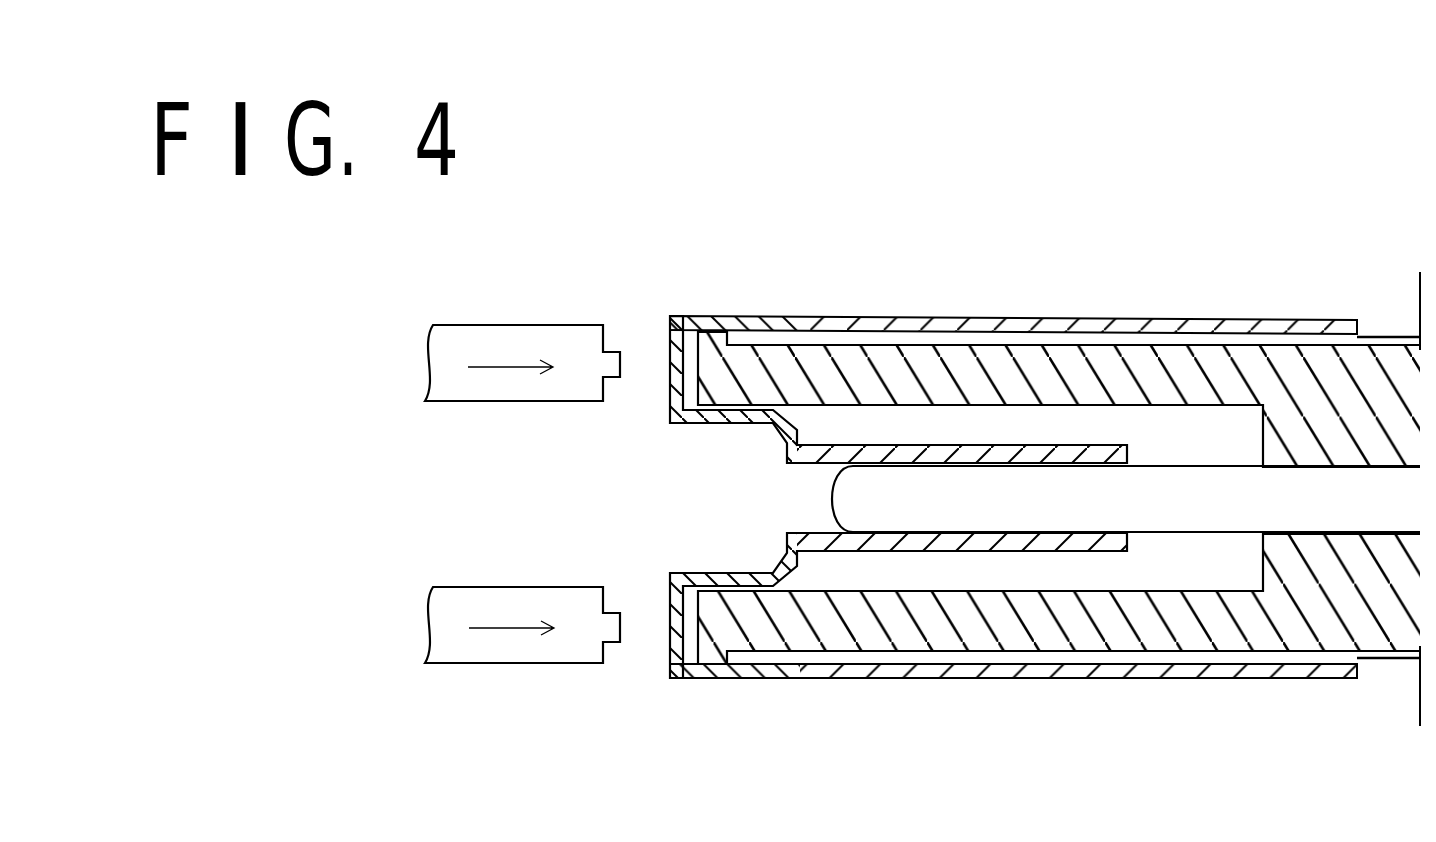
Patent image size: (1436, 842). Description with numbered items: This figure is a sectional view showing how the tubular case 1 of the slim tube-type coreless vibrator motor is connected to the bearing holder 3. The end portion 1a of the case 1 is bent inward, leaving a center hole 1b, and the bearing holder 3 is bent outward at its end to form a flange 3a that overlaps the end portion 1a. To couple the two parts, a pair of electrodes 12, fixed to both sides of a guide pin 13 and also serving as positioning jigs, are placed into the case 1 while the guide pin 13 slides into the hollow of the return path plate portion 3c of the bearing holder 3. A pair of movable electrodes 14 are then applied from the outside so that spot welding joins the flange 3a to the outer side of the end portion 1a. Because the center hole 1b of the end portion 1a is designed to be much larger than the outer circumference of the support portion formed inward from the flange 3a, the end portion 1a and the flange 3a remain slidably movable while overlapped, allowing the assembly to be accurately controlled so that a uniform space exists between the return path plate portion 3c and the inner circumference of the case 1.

The case 1 is at (982, 330).
The end portion 1a is at (690, 336).
The center hole 1b is at (741, 487).
The bearing holder 3 is at (737, 573).
The flange 3a is at (683, 328).
The return path plate portion 3c is at (920, 540).
The electrodes 12 is at (1100, 362).
The guide pin 13 is at (1163, 507).
The movable electrodes 14 is at (523, 347).